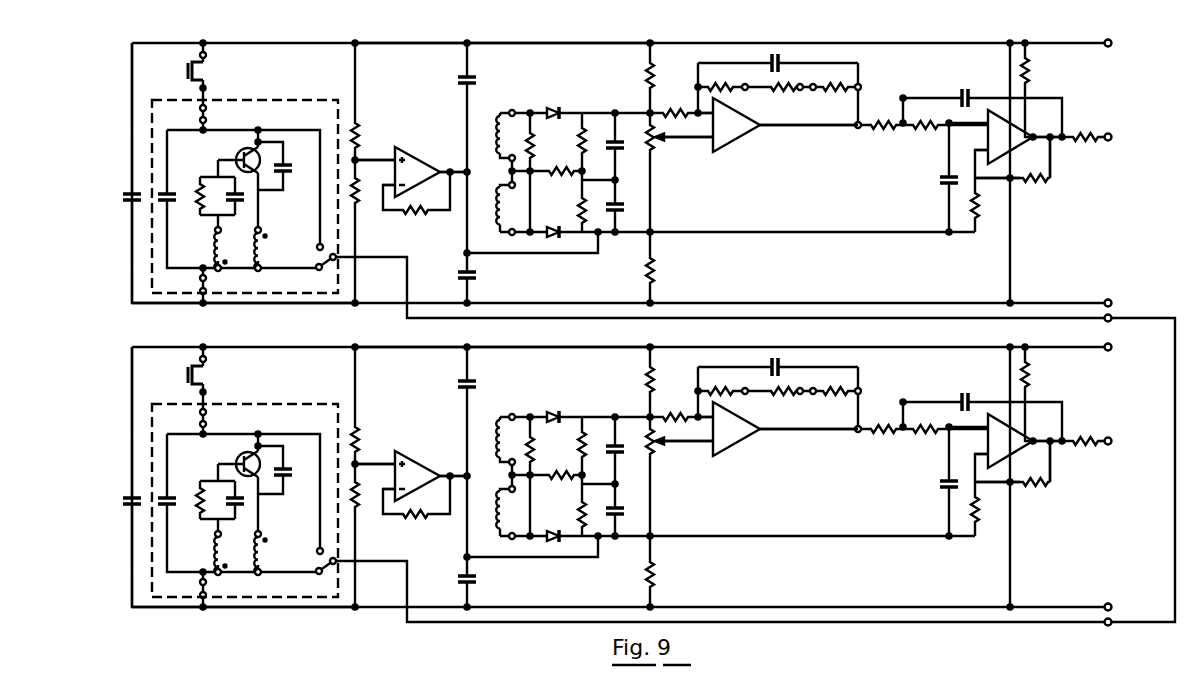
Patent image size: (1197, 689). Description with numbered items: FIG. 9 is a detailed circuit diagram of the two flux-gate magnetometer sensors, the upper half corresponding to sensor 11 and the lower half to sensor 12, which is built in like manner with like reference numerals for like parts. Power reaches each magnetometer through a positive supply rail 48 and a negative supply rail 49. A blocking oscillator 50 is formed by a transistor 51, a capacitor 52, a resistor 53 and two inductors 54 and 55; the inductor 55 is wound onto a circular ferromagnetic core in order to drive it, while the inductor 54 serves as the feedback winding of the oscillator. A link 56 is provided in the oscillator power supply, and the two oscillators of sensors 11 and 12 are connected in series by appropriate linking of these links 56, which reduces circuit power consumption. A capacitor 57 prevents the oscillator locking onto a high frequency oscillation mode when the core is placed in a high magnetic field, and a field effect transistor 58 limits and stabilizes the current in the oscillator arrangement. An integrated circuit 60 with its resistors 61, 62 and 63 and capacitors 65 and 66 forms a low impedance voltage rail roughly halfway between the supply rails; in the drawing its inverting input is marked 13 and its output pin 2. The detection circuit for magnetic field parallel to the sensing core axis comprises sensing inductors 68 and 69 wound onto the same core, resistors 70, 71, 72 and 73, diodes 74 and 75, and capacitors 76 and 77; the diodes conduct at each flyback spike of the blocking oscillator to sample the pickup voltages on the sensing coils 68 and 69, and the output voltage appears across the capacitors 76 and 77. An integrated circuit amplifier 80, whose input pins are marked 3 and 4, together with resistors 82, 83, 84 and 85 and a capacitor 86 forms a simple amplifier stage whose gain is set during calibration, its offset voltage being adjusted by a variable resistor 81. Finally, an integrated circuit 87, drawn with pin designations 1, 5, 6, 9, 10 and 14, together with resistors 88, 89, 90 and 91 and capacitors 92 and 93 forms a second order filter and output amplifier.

The output terminal of amplifier 87 1 is at (1039, 274).
The output terminal of amplifier 60 2 is at (453, 310).
The non-inverting input of amplifier 80 3 is at (706, 254).
The inverting input of amplifier 80 4 is at (688, 277).
The non-inverting input of amplifier 87 5 is at (968, 268).
The inverting input of amplifier 87 6 is at (980, 299).
The feedback connection of amplifier 87 9 is at (1039, 309).
The feedback connection of amplifier 87 10 is at (1045, 170).
The sensor 11 is at (807, 289).
The sensor 12 is at (379, 301).
The inverting input of amplifier 60 13 is at (380, 338).
The bias resistor 14 is at (1022, 114).
The positive supply rail 48 is at (427, 43).
The negative supply rail 49 is at (237, 303).
The blocking oscillator 50 is at (319, 129).
The transistor 51 is at (249, 152).
The capacitor 52 is at (246, 200).
The resistor 53 is at (195, 186).
The inductor 54 is at (211, 242).
The inductor 55 is at (260, 250).
The link 56 is at (322, 269).
The capacitor 57 is at (283, 170).
The field effect transistor 58 is at (188, 75).
The integrated circuit 60 is at (401, 154).
The resistor 61 is at (358, 134).
The resistor 62 is at (356, 207).
The resistor 63 is at (413, 214).
The capacitor 65 is at (456, 84).
The capacitor 66 is at (456, 268).
The inductor 68 is at (492, 119).
The inductor 69 is at (513, 360).
The resistor 70 is at (518, 152).
The resistor 71 is at (580, 116).
The resistor 72 is at (564, 152).
The resistor 73 is at (574, 206).
The diode 74 is at (549, 102).
The diode 75 is at (554, 243).
The capacitor 76 is at (614, 138).
The capacitor 77 is at (615, 202).
The integrated circuit amplifier 80 is at (735, 460).
The variable resistor 81 is at (654, 142).
The resistor 82 is at (684, 112).
The resistor 83 is at (727, 90).
The resistor 84 is at (777, 91).
The resistor 85 is at (838, 90).
The capacitor 86 is at (775, 55).
The integrated circuit 87 is at (1015, 149).
The resistor 88 is at (866, 130).
The resistor 89 is at (918, 130).
The resistor 90 is at (977, 214).
The resistor 91 is at (1028, 181).
The capacitor 92 is at (943, 188).
The capacitor 93 is at (966, 98).